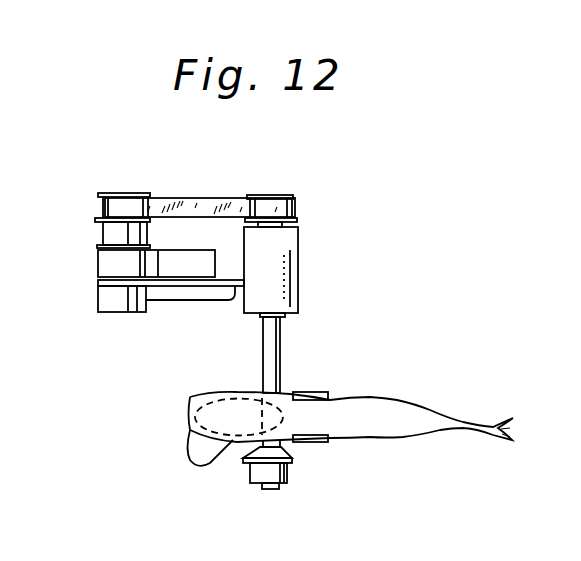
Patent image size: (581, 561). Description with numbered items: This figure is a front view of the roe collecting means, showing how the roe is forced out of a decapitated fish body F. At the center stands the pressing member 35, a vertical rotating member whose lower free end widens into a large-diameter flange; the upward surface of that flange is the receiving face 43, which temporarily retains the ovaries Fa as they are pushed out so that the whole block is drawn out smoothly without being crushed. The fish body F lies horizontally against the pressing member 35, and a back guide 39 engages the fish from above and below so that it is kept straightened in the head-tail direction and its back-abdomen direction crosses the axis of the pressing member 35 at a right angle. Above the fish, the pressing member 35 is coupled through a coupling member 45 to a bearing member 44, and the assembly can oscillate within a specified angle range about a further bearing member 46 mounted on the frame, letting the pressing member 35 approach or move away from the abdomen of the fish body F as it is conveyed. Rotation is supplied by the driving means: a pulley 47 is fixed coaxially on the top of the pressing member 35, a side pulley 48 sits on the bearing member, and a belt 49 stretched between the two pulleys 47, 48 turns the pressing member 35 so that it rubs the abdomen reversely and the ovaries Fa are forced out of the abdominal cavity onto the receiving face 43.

The pressing member 35 is at (267, 373).
The back guide 39 is at (313, 390).
The receiving face 43 is at (292, 452).
The bearing member 44 is at (293, 265).
The coupling member 45 is at (177, 287).
The bearing member 46 is at (110, 263).
The pulley 47 is at (295, 207).
The side pulley 48 is at (117, 195).
The belt 49 is at (193, 199).
The fish body F is at (395, 400).
The ovaries Fa is at (203, 458).